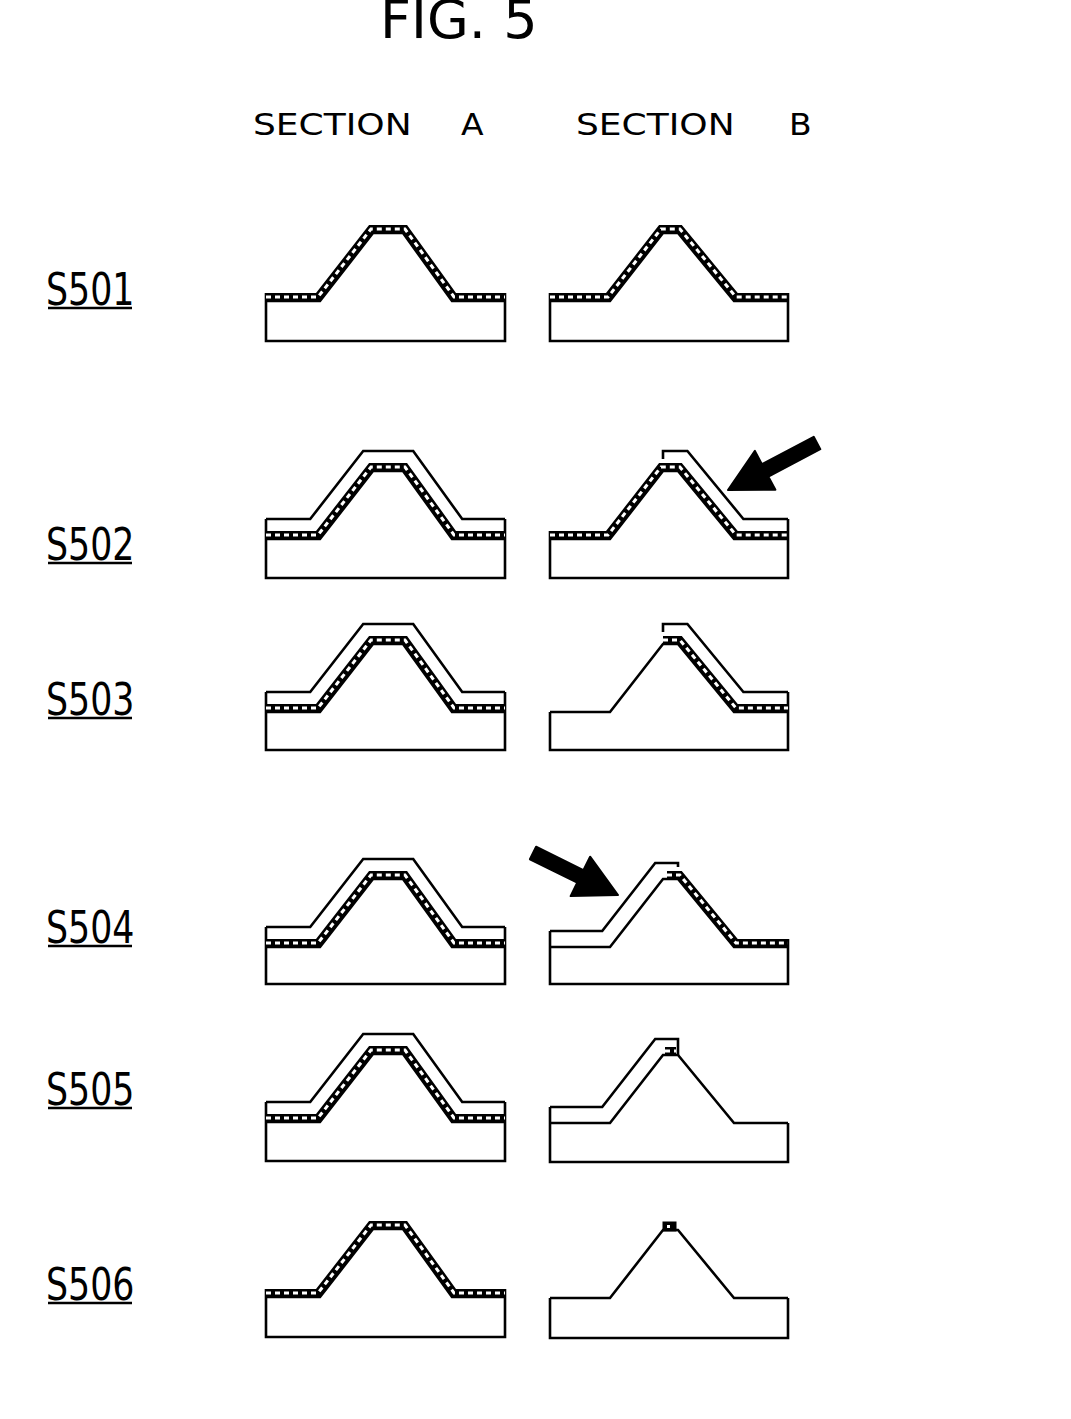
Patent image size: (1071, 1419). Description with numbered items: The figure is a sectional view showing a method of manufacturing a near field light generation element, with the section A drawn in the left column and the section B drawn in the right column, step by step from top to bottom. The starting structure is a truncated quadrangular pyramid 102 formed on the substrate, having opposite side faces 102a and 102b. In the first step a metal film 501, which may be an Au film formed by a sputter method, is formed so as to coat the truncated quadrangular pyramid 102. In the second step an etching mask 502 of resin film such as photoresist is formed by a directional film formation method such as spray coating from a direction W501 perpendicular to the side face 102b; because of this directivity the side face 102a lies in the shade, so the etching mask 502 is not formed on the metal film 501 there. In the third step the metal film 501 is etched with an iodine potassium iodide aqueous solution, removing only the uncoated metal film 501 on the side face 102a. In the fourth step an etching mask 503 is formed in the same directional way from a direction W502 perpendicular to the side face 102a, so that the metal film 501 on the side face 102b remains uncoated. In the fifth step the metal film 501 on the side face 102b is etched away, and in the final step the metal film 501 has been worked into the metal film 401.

The truncated quadrangular pyramid 102 is at (378, 280).
The side face 102a is at (640, 507).
The side face 102b is at (695, 903).
The metal film 501 is at (425, 250).
The etching mask 502 is at (335, 500).
The etching mask 503 is at (325, 915).
The metal film 401 is at (428, 1255).
The direction W501 is at (811, 449).
The direction W502 is at (549, 851).